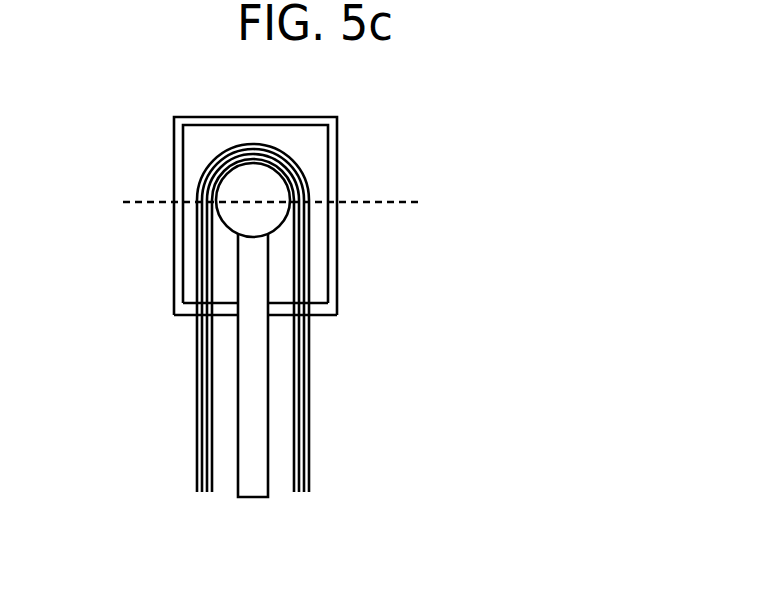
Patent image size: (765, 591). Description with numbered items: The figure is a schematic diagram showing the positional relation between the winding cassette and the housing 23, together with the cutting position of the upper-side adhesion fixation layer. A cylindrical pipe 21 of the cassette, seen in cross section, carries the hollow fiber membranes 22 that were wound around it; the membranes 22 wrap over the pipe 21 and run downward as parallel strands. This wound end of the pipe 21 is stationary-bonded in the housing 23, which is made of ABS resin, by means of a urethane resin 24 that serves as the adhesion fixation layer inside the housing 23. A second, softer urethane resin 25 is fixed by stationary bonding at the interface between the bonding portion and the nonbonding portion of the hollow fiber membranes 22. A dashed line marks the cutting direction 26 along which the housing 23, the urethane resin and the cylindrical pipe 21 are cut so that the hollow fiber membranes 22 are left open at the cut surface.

The cylindrical pipe 21 is at (293, 192).
The hollow fiber membranes 22 is at (308, 358).
The housing 23 is at (337, 257).
The urethane resin 24 is at (205, 147).
The urethane resin 25 is at (187, 313).
The cutting direction 26 is at (152, 202).